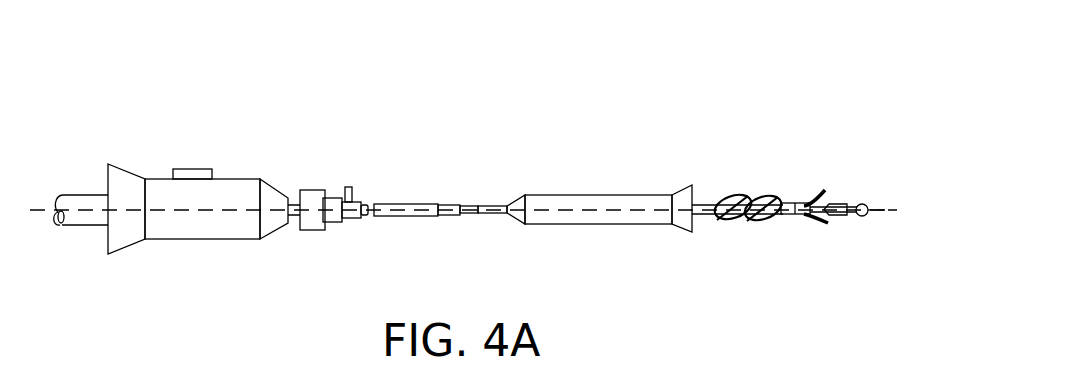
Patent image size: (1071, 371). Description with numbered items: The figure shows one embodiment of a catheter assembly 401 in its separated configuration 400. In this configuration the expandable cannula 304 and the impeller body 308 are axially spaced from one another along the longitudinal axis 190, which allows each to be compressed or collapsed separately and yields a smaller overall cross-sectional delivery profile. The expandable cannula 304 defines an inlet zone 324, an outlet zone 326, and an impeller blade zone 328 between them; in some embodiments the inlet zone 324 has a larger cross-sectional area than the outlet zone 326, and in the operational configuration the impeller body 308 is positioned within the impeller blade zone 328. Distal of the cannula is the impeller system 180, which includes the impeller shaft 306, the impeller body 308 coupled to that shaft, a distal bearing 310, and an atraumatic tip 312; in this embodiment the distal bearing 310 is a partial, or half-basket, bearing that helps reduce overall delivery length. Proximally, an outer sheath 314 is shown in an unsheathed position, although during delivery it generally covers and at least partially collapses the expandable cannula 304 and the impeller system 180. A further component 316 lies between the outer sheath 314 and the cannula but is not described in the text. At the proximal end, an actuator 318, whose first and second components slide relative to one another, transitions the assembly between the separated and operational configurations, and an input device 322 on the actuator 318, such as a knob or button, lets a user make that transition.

The catheter assembly 401 is at (456, 79).
The actuator 318 is at (228, 133).
The input device 322 is at (192, 168).
The outer sheath 314 is at (390, 203).
The intermediate shaft 316 is at (493, 205).
The outlet zone 326 is at (512, 202).
The expandable cannula 304 is at (543, 194).
The inlet zone 324 is at (671, 170).
The impeller shaft 306 is at (705, 203).
The impeller body 308 is at (746, 175).
The separated configuration 400 is at (797, 130).
The distal bearing 310 is at (810, 188).
The atraumatic tip 312 is at (848, 203).
The longitudinal axis 190 is at (890, 208).
The impeller blade zone 328 is at (672, 232).
The impeller system 180 is at (863, 232).